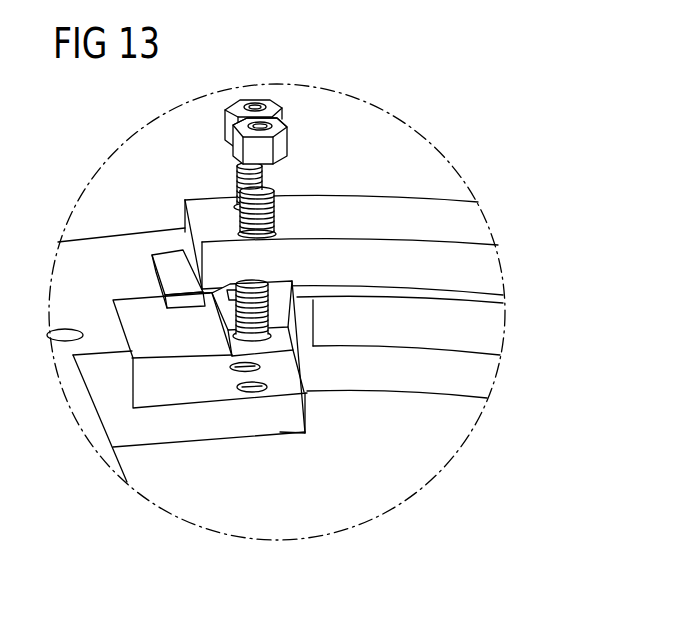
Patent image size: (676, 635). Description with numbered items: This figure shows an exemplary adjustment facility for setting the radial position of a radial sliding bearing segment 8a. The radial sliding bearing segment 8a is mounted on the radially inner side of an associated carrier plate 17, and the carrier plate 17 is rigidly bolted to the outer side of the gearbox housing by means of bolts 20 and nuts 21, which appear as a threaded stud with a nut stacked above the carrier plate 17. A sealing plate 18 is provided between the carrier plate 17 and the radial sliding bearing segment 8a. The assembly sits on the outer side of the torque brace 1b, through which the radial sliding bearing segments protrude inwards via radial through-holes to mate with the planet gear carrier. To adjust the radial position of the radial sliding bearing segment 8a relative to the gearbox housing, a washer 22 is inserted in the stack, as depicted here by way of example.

The torque brace 1b is at (101, 262).
The radial sliding bearing segment 8a is at (493, 329).
The carrier plate 17 is at (485, 270).
The sealing plate 18 is at (497, 298).
The bolt 20 is at (280, 212).
The nut 21 is at (282, 146).
The washer 22 is at (270, 342).